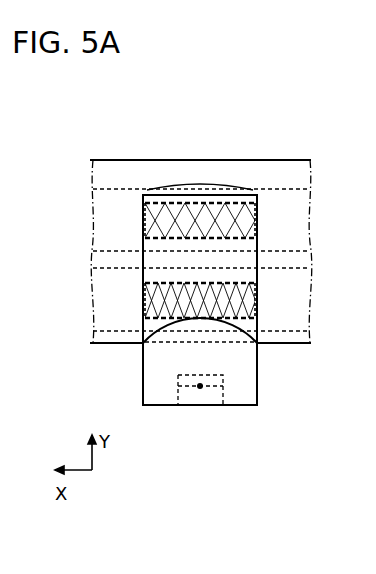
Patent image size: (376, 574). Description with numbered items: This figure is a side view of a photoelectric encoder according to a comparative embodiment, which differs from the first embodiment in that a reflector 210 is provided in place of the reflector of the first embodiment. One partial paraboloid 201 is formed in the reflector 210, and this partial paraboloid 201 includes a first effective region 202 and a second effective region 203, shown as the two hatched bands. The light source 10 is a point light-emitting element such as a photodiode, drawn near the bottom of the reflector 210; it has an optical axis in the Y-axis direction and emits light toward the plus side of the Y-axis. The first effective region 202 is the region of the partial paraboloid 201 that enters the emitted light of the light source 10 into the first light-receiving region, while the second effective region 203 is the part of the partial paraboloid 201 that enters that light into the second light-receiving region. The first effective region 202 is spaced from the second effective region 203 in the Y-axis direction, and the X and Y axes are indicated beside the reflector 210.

The partial paraboloid 201 is at (157, 197).
The first effective region 202 is at (218, 216).
The second effective region 203 is at (243, 302).
The light source 10 is at (192, 398).
The reflector 210 is at (155, 436).